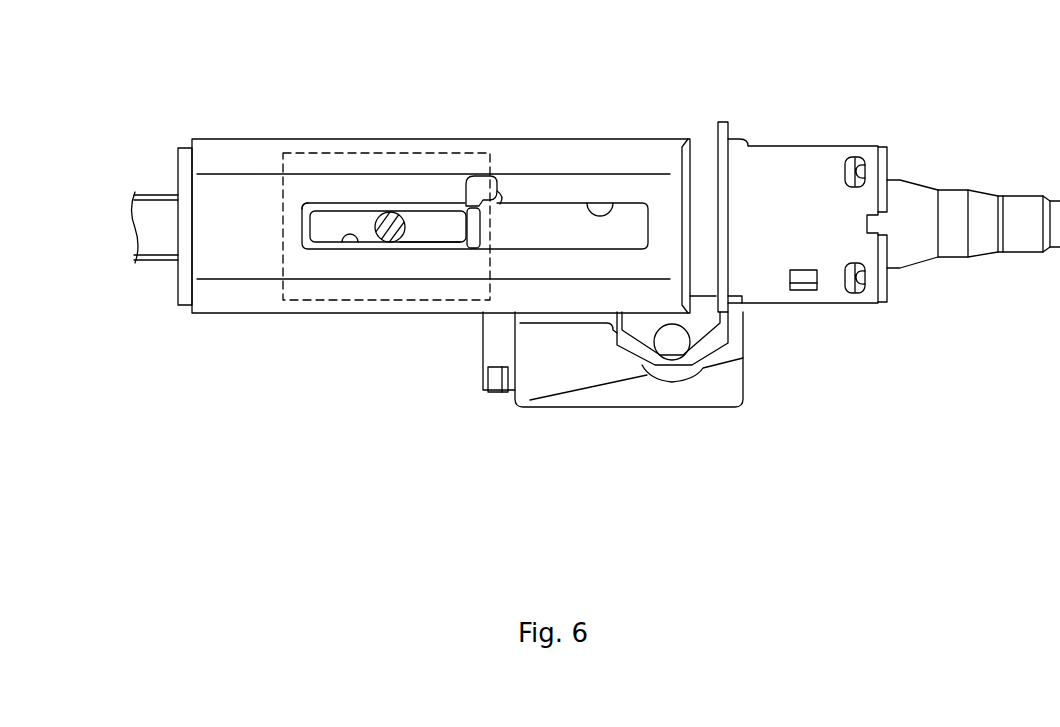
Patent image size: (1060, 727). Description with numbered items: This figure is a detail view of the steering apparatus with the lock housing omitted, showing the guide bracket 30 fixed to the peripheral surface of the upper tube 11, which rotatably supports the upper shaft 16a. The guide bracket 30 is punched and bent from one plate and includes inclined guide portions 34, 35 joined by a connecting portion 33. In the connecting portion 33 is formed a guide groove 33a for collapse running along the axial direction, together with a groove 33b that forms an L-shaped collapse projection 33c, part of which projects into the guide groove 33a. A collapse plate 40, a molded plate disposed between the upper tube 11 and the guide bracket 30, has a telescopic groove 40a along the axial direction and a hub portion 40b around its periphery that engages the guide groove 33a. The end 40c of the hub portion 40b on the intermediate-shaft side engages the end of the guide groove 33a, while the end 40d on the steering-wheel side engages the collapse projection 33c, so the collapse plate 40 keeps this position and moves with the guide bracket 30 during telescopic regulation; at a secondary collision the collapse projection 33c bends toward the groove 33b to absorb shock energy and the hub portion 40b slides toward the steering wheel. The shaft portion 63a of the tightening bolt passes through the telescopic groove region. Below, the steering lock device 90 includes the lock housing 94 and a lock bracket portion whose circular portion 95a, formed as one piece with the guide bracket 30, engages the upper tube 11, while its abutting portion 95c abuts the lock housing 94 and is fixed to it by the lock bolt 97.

The upper tube 11 is at (868, 298).
The upper shaft 16a is at (1023, 208).
The guide bracket 30 is at (543, 139).
The connecting portion 33 is at (212, 260).
The guide groove for collapse 33a is at (600, 213).
The groove 33b is at (497, 200).
The collapse projection 33c is at (466, 193).
The guide portion 34 is at (246, 157).
The guide portion 35 is at (245, 300).
The collapse plate 40 is at (388, 150).
The telescopic groove 40a is at (350, 236).
The hub portion 40b is at (425, 247).
The end of hub portion 40c is at (300, 230).
The end of hub portion 40d is at (480, 232).
The shaft portion 63a is at (390, 241).
The steering lock device 90 is at (747, 428).
The lock housing 94 is at (560, 388).
The circular portion 95a is at (707, 203).
The abutting portion 95c is at (710, 350).
The lock bolt 97 is at (667, 350).